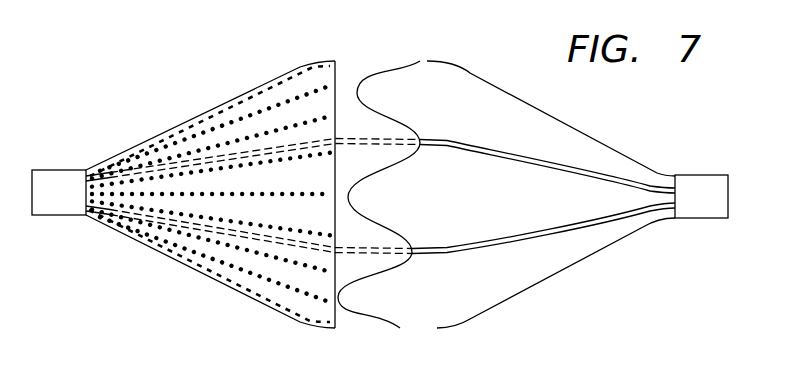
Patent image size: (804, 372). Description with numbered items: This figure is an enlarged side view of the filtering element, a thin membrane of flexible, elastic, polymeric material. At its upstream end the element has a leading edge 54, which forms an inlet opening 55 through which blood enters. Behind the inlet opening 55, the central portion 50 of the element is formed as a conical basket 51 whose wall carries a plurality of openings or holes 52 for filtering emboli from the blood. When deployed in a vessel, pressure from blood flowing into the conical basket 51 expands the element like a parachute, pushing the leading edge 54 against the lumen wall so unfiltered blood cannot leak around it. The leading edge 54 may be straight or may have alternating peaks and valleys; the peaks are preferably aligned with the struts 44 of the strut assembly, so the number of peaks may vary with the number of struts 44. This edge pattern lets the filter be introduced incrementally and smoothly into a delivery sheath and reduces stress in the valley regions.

The struts 44 is at (575, 167).
The central portion 50 is at (275, 297).
The conical basket 51 is at (243, 102).
The openings or holes 52 is at (185, 232).
The leading edge 54 is at (350, 70).
The inlet opening 55 is at (438, 90).